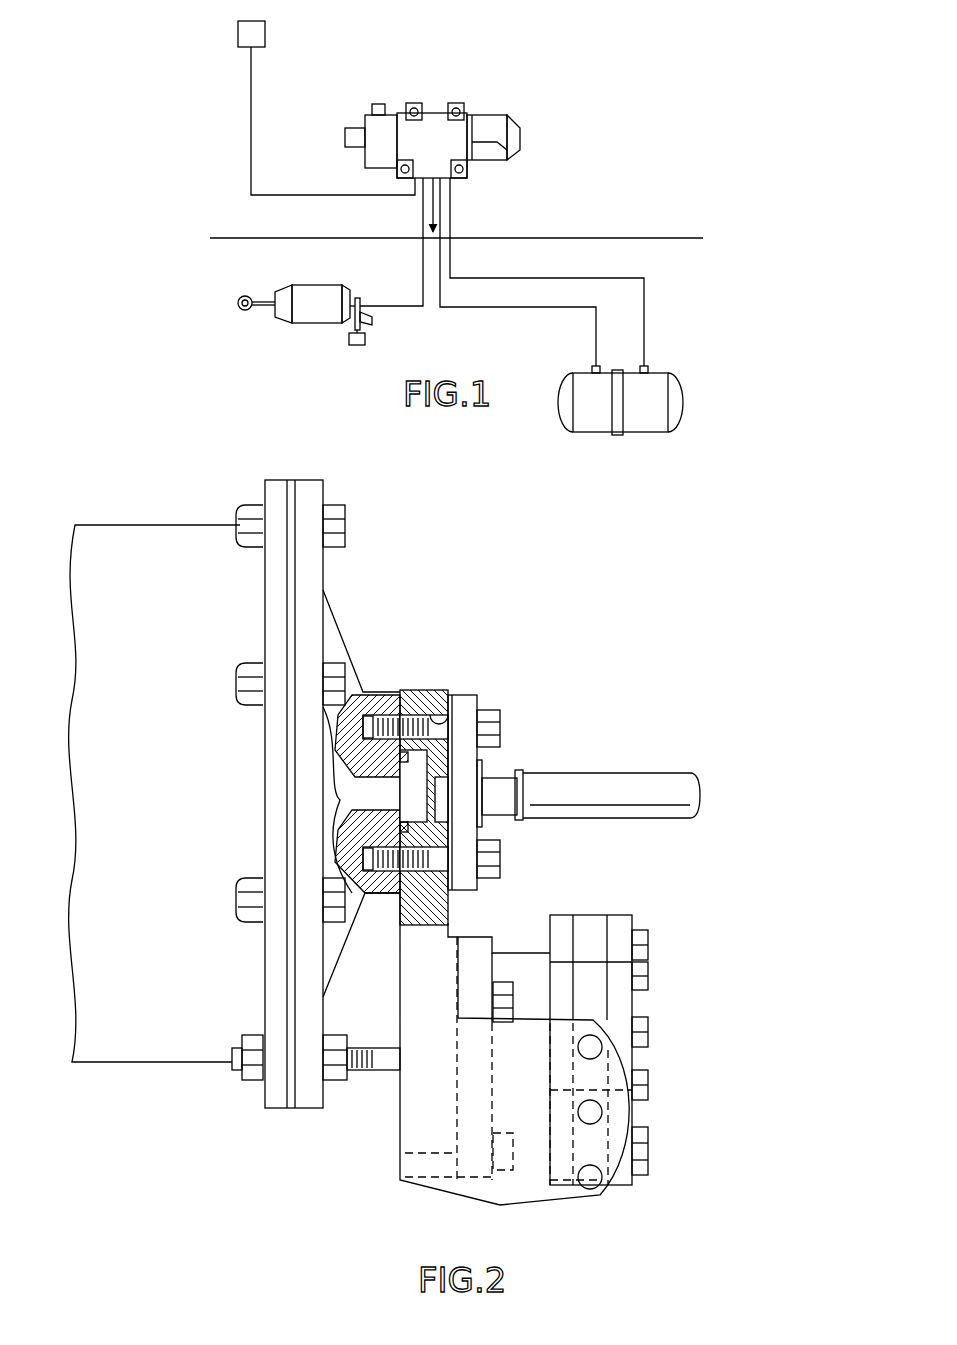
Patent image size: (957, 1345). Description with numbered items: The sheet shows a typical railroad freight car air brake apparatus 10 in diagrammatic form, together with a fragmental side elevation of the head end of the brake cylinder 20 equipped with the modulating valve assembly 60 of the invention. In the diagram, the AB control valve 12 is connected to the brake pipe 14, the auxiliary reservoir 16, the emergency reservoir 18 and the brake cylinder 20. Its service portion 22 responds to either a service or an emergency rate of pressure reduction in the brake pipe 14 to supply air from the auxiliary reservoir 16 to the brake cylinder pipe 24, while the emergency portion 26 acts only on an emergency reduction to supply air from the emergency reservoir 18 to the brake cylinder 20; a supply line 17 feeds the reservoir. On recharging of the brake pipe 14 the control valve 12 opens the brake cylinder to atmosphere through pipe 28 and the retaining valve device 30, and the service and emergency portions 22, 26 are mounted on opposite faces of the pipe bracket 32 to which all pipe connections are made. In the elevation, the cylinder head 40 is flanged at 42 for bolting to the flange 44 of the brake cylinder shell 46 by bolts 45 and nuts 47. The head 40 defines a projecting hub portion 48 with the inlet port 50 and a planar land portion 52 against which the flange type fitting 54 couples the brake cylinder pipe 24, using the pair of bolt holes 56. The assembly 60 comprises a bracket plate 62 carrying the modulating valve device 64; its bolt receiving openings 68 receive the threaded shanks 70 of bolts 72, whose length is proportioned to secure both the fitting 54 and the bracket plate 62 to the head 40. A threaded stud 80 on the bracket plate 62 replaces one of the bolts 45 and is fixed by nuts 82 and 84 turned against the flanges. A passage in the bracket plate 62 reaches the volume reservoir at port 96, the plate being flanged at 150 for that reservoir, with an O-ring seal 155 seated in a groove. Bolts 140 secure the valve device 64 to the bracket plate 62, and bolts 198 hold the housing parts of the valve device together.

In FIG. 1, the brake apparatus 10 is at (627, 135).
In FIG. 1, the AB control valve 12 is at (536, 120).
In FIG. 1, the brake pipe 14 is at (626, 238).
In FIG. 1, the auxiliary reservoir 16 is at (690, 407).
In FIG. 1, the supply line 17 is at (645, 312).
In FIG. 1, the emergency reservoir 18 is at (597, 416).
In FIG. 1, the brake cylinder 20 is at (311, 325).
In FIG. 2, the brake cylinder 20 is at (143, 542).
In FIG. 1, the service portion 22 is at (373, 124).
In FIG. 1, the brake cylinder pipe 24 is at (395, 306).
In FIG. 2, the brake cylinder pipe 24 is at (662, 775).
In FIG. 1, the emergency portion 26 is at (488, 118).
In FIG. 1, the pipe 28 is at (251, 117).
In FIG. 1, the retaining valve device 30 is at (265, 33).
In FIG. 1, the pipe bracket 32 is at (428, 128).
In FIG. 1, the cylinder head 40 is at (349, 292).
In FIG. 2, the cylinder head 40 is at (343, 628).
In FIG. 2, the head flange 42 is at (318, 577).
In FIG. 2, the shell flange 44 is at (281, 486).
In FIG. 2, the bolts 45 is at (336, 510).
In FIG. 2, the brake cylinder shell 46 is at (185, 540).
In FIG. 2, the nuts 47 is at (248, 520).
In FIG. 2, the hub portion 48 is at (388, 692).
In FIG. 2, the inlet port 50 is at (375, 800).
In FIG. 2, the land portion 52 is at (420, 705).
In FIG. 2, the flange type fitting 54 is at (472, 700).
In FIG. 2, the bolt holes 56 is at (358, 762).
In FIG. 1, the modulating valve assembly 60 is at (380, 328).
In FIG. 2, the modulating valve assembly 60 is at (670, 982).
In FIG. 2, the bracket plate 62 is at (420, 690).
In FIG. 2, the modulating valve device 64 is at (636, 916).
In FIG. 2, the bolt receiving openings 68 is at (465, 703).
In FIG. 2, the threaded shanks 70 is at (470, 756).
In FIG. 2, the bolts 72 is at (490, 732).
In FIG. 2, the threaded stud 80 is at (382, 1072).
In FIG. 2, the nut 82 is at (252, 1075).
In FIG. 2, the nut 84 is at (341, 1040).
In FIG. 2, the port 96 is at (598, 1112).
In FIG. 2, the bolts 140 is at (505, 998).
In FIG. 2, the flange 150 is at (612, 1155).
In FIG. 2, the O-ring seal 155 is at (400, 757).
In FIG. 2, the bolts 198 is at (650, 937).